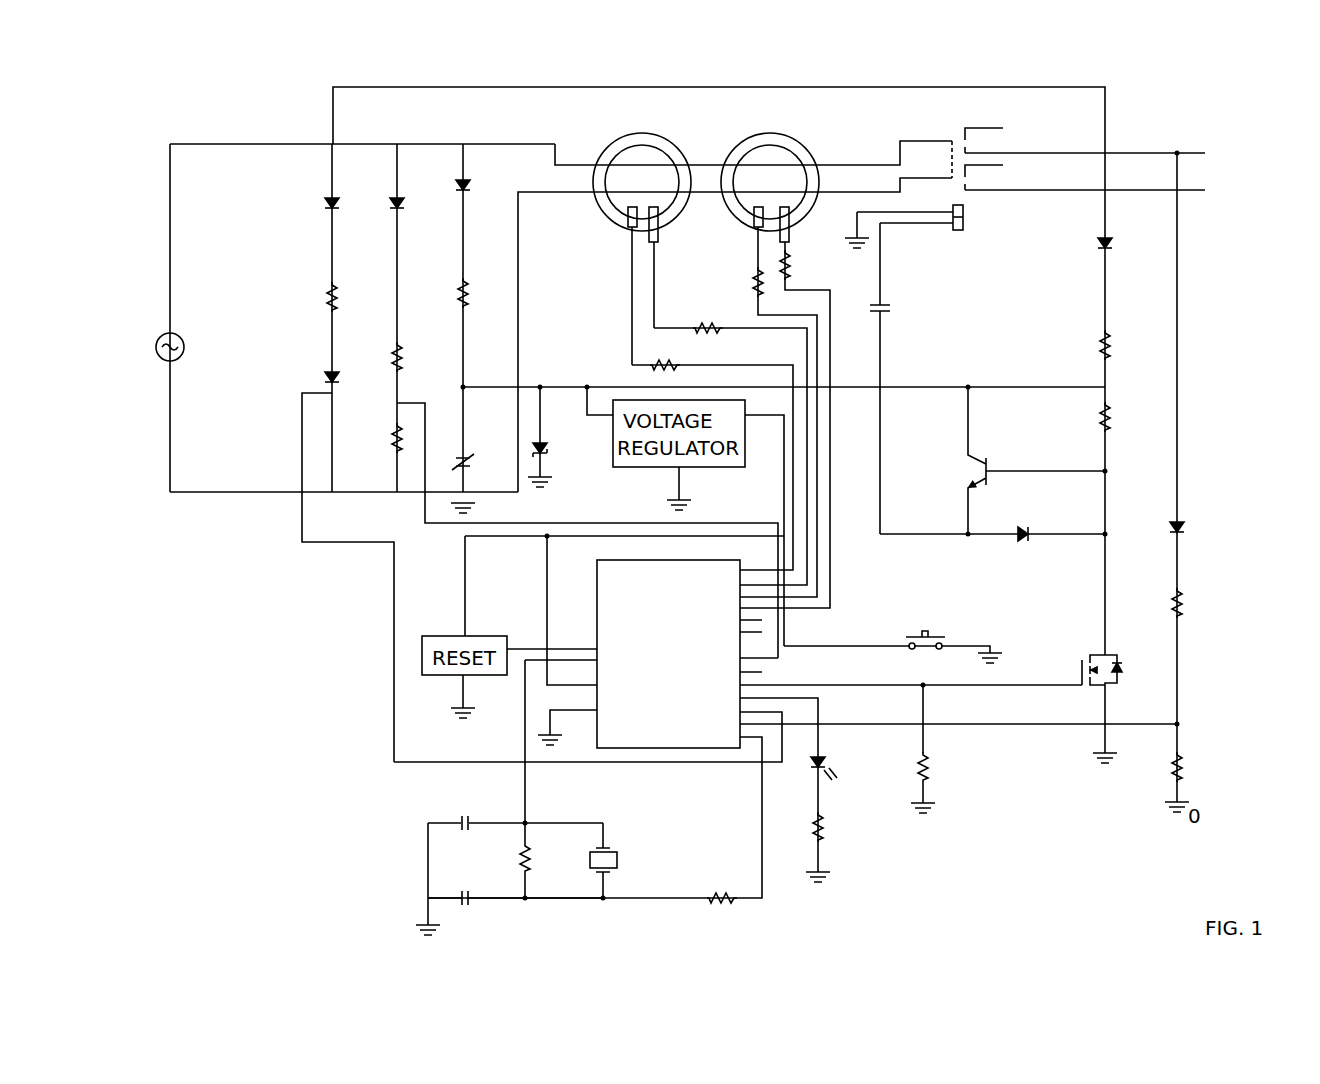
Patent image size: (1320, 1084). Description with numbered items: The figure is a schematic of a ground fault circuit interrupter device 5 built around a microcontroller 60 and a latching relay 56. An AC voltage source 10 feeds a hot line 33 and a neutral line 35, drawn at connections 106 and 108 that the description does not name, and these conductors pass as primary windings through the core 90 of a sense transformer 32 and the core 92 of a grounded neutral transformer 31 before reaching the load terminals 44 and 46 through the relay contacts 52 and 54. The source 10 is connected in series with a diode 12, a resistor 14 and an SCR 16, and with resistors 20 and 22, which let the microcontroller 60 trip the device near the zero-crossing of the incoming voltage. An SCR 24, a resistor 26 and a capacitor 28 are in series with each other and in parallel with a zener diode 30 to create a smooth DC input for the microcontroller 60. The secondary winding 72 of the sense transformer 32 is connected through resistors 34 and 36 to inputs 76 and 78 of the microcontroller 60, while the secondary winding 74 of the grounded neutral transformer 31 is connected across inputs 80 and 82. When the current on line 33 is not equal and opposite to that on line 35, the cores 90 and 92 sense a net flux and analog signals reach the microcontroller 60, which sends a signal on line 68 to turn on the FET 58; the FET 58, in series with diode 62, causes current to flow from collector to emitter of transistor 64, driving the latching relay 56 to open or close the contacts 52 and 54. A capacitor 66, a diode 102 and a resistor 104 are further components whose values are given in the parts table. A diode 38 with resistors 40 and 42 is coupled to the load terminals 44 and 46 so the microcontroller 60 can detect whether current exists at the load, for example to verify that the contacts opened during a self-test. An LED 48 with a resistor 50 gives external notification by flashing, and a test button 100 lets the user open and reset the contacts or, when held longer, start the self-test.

The ground fault circuit interrupter device 5 is at (300, 628).
The voltage source 10 is at (156, 335).
The diode 12 is at (322, 203).
The resistor 14 is at (324, 300).
The SCR 16 is at (326, 374).
The resistor 20 is at (400, 356).
The resistor 22 is at (394, 440).
The SCR 24 is at (474, 188).
The resistor 26 is at (466, 286).
The capacitor 28 is at (472, 460).
The zener diode 30 is at (548, 448).
The grounded neutral transformer 31 is at (758, 129).
The sense transformer 32 is at (618, 129).
The hot line 33 is at (576, 164).
The resistor 34 is at (774, 362).
The neutral line 35 is at (546, 200).
The resistor 36 is at (746, 322).
The diode 38 is at (1192, 527).
The resistor 40 is at (1192, 604).
The resistor 42 is at (1193, 762).
The load terminal 44 is at (1190, 148).
The load terminal 46 is at (1190, 188).
The light emitting diode 48 is at (836, 750).
The resistor 50 is at (830, 811).
The contact 52 is at (946, 131).
The contact 54 is at (970, 209).
The latching relay 56 is at (964, 232).
The FET 58 is at (1132, 672).
The microcontroller 60 is at (594, 603).
The diode 62 is at (1032, 524).
The transistor 64 is at (974, 470).
The capacitor 66 is at (892, 308).
The line 68 is at (852, 683).
The secondary winding 72 is at (628, 232).
The secondary winding 74 is at (758, 226).
The line 76 is at (800, 531).
The line 78 is at (814, 554).
The input 80 is at (786, 593).
The input 82 is at (836, 595).
The core 90 is at (608, 182).
The core 92 is at (736, 182).
The test button 100 is at (928, 636).
The diode 102 is at (1094, 242).
The resistor 104 is at (1094, 350).
The line input 106 is at (246, 152).
The neutral input 108 is at (240, 490).